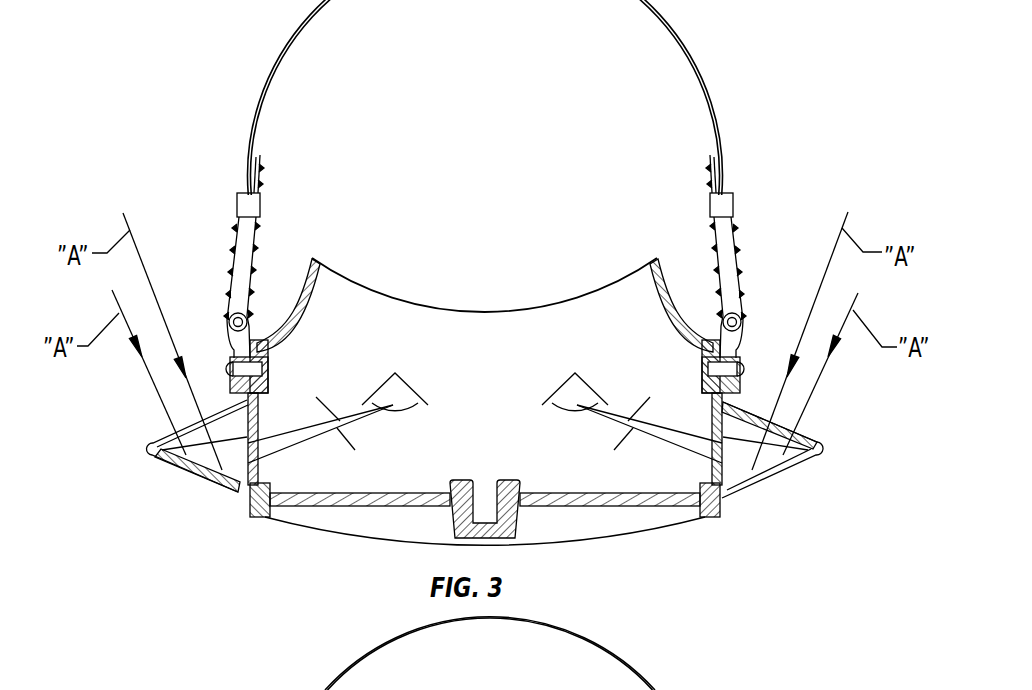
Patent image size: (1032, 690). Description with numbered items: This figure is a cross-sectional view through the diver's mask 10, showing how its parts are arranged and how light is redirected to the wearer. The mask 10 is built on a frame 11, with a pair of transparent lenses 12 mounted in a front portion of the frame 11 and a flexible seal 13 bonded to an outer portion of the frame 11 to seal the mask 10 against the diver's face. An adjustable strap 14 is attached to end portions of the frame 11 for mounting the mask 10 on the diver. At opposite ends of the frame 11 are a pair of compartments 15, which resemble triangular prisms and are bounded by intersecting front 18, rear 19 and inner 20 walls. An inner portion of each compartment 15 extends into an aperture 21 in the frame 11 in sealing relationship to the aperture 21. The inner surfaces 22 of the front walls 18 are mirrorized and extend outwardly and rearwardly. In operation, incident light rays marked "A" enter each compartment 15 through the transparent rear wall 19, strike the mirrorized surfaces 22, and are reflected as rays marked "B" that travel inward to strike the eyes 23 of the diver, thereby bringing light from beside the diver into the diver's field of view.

The diver's mask 10 is at (296, 624).
The frame 11 is at (708, 517).
The transparent lenses 12 is at (358, 506).
The flexible seal 13 is at (387, 300).
The adjustable strap 14 is at (674, 65).
The compartments 15 is at (160, 455).
The front wall 18 is at (237, 492).
The rear wall 19 is at (165, 433).
The inner wall 20 is at (258, 467).
The aperture 21 is at (253, 512).
The mirrorized inside surfaces 22 is at (205, 468).
The eyes 23 is at (398, 405).